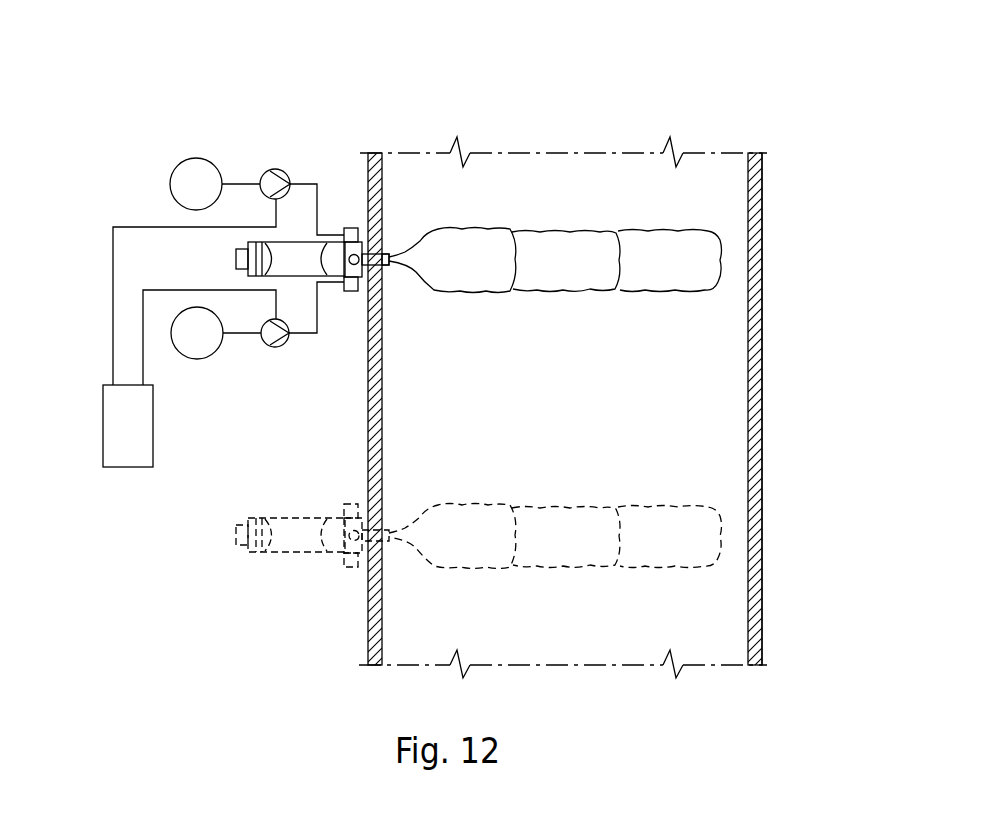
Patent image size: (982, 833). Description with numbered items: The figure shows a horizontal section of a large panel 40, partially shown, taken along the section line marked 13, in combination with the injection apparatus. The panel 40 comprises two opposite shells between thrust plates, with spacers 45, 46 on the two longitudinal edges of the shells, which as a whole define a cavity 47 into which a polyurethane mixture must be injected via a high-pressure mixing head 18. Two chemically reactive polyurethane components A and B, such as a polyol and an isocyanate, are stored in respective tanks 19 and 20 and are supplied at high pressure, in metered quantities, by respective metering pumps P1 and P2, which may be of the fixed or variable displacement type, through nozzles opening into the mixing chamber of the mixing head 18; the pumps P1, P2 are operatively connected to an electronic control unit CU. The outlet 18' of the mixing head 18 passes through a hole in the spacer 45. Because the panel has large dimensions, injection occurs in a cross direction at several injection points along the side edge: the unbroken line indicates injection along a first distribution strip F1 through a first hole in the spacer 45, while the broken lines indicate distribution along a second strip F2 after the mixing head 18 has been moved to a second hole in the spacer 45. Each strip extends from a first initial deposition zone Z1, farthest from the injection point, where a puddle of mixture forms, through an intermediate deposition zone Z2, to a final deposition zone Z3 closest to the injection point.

The mixing head 18 is at (312, 187).
The nozzle outlet 18' is at (355, 310).
The tank 19 is at (200, 359).
The tank 20 is at (198, 158).
The panel 40 is at (565, 351).
The spacer 45 is at (376, 610).
The spacer 46 is at (755, 604).
The cavity 47 is at (725, 393).
The section line 13 is at (72, 240).
The metering pump P1 is at (302, 333).
The metering pump P2 is at (302, 185).
The electronic control unit CU is at (189, 333).
The first initial deposition zone Z1 is at (663, 262).
The intermediate deposition zone Z2 is at (562, 262).
The final deposition zone Z3 is at (555, 398).
The first distribution strip F1 is at (590, 332).
The second distribution strip F2 is at (542, 452).